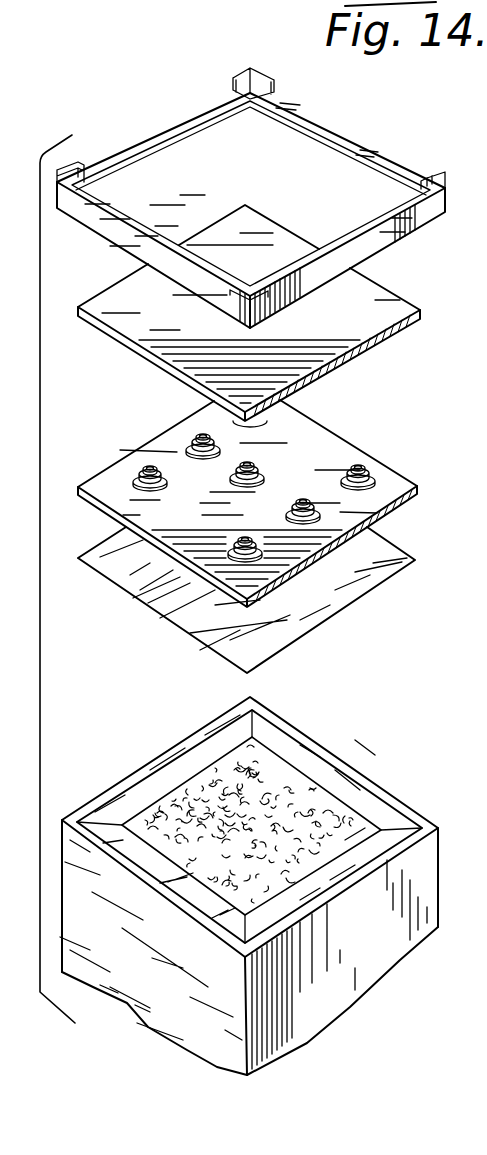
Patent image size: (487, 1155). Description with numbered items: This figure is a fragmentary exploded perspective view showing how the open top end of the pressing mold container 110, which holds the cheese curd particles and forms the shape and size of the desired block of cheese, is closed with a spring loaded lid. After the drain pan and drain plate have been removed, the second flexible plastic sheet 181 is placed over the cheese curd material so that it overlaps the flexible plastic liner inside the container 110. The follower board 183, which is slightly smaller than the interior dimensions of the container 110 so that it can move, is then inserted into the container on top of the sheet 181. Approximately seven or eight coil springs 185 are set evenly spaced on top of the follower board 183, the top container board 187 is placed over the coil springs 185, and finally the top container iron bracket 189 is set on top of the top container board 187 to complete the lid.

The pressing mold container 110 is at (349, 1002).
The second flexible plastic sheet 181 is at (375, 563).
The follower board 183 is at (382, 487).
The coil springs 185 is at (304, 500).
The top container board 187 is at (382, 300).
The top container iron bracket 189 is at (348, 142).